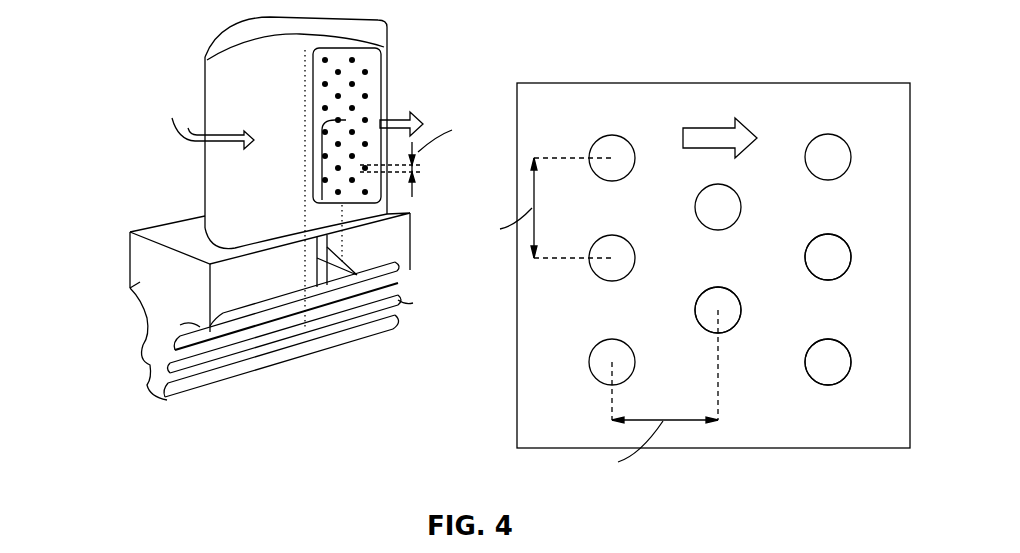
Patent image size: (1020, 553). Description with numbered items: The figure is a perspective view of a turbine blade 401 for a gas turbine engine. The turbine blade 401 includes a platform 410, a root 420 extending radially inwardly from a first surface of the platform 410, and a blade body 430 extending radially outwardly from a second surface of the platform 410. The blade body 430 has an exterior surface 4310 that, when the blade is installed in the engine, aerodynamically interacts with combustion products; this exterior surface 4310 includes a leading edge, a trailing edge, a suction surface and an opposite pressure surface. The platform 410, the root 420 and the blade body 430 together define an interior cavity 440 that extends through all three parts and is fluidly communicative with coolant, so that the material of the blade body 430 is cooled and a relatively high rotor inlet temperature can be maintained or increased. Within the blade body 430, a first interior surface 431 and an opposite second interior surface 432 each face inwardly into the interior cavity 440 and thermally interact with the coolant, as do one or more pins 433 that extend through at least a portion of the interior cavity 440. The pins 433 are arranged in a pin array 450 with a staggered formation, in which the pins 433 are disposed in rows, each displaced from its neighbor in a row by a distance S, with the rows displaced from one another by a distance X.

The blade body 430 is at (205, 57).
The exterior surface 4310 is at (287, 98).
The turbine blade 401 is at (267, 306).
The platform 410 is at (130, 289).
The root 420 is at (148, 364).
The interior cavity 440 is at (308, 318).
The first interior surface 431 is at (713, 242).
The second interior surface 432 is at (648, 95).
The pin array 450 is at (697, 271).
The pins 433 is at (811, 276).